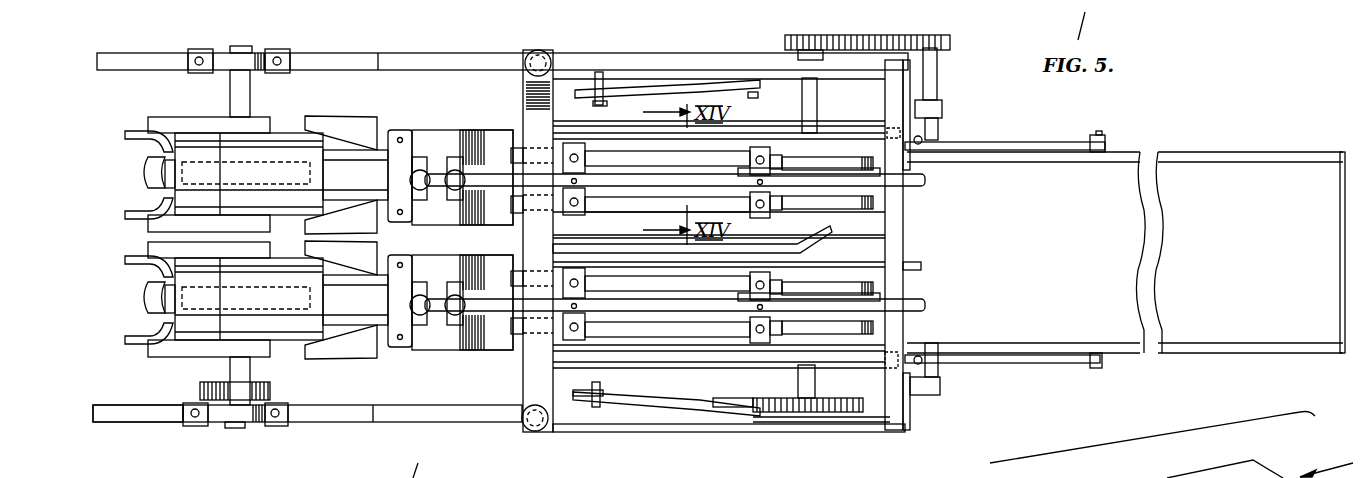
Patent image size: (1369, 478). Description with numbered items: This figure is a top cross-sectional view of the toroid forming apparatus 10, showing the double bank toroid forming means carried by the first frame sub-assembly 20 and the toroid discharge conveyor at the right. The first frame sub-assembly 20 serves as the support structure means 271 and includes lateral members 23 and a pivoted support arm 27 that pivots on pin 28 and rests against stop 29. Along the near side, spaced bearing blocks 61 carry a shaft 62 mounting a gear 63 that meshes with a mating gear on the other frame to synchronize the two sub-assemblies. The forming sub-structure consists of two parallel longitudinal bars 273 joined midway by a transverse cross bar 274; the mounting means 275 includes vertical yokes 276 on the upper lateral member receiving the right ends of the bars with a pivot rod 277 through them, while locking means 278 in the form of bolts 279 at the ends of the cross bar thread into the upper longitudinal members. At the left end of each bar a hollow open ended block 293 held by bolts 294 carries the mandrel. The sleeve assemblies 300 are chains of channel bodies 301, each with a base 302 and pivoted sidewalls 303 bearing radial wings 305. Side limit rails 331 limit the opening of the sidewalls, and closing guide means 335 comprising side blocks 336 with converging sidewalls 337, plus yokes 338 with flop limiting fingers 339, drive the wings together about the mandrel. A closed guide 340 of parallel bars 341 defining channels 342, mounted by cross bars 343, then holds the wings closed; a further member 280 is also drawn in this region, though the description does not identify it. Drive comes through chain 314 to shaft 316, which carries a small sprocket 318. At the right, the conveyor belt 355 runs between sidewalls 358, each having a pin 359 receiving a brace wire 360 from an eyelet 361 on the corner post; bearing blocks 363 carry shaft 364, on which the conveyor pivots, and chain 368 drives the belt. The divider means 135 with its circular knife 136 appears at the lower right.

The toroid forming apparatus 10 is at (302, 427).
The first frame sub-assembly 20 is at (113, 425).
The lateral members 23 is at (896, 406).
The pivoted support arm 27 is at (676, 88).
The pin 28 is at (750, 96).
The stop 29 is at (601, 86).
The bearing blocks 61 is at (246, 58).
The shaft 62 is at (230, 368).
The gear 63 is at (205, 390).
The divider means 135 is at (1091, 475).
The circular knife 136 is at (1050, 477).
The support structure means 271 is at (392, 54).
The longitudinal bars 273 is at (730, 68).
The transverse cross bar 274 is at (530, 218).
The means mounting the sub-structure 275 is at (908, 196).
The vertical yokes 276 is at (905, 173).
The pivot rod 277 is at (902, 243).
The locking means 278 is at (557, 56).
The bolts 279 is at (529, 54).
The plate 280 is at (818, 243).
The hollow open ended block 293 is at (457, 168).
The bolts 294 is at (457, 300).
The sleeve assemblies 300 is at (141, 157).
The channel bodies 301 is at (810, 295).
The base 302 is at (150, 174).
The sidewalls 303 is at (172, 100).
The wings 305 is at (210, 137).
The chain 314 is at (802, 410).
The shaft 316 is at (814, 383).
The small sprocket 318 is at (806, 56).
The side limit rails 331 is at (615, 272).
The closing guide means 335 is at (404, 130).
The side blocks 336 is at (300, 125).
The sidewalls 337 is at (292, 128).
The yokes 338 is at (415, 135).
The flop limiting fingers 339 is at (403, 258).
The closed guide 340 is at (659, 344).
The parallel bars 341 is at (722, 160).
The channels 342 is at (630, 170).
The cross bars 343 is at (575, 143).
The conveyor belt 355 is at (1215, 248).
The sidewalls 358 is at (1196, 160).
The pin 359 is at (1100, 137).
The brace wire 360 is at (999, 142).
The eyelet 361 is at (923, 140).
The bearing blocks 363 is at (934, 109).
The shaft 364 is at (932, 64).
The chain 368 is at (861, 34).